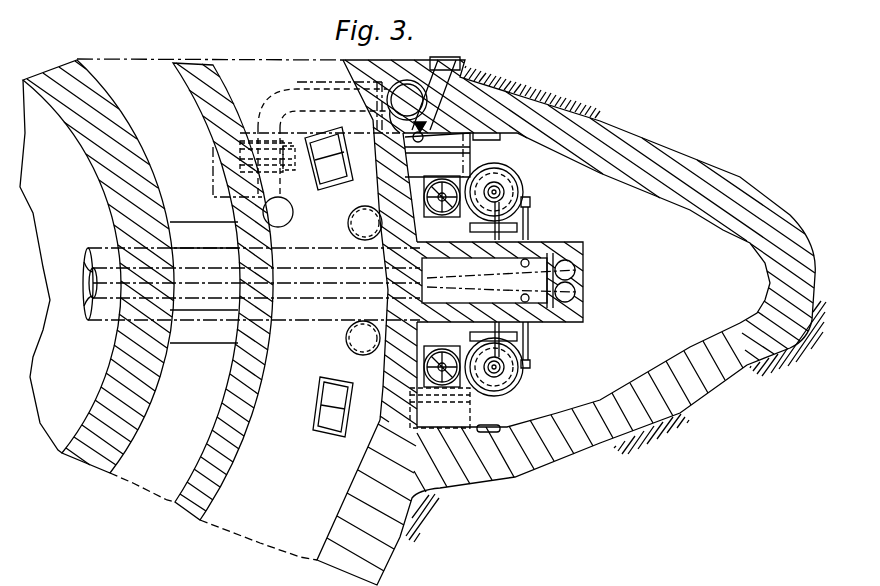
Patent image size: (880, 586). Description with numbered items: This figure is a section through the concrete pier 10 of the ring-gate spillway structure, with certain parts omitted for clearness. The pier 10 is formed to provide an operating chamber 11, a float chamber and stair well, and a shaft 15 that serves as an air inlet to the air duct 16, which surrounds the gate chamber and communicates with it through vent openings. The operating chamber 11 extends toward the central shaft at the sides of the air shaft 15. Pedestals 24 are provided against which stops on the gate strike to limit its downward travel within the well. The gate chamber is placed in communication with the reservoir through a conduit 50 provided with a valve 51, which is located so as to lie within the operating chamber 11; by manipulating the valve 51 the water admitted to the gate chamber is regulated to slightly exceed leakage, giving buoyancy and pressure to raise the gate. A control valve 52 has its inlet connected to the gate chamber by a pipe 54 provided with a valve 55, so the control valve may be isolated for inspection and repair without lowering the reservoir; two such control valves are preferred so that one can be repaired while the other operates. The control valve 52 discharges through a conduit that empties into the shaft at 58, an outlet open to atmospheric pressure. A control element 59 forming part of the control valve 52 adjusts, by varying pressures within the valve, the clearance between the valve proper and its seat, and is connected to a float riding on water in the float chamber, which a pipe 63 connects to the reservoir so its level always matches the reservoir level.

The concrete pier 10 is at (670, 163).
The operating chamber 11 is at (707, 230).
The shaft 15 is at (578, 272).
The air duct 16 is at (213, 371).
The pedestals 24 is at (323, 137).
The conduit 50 is at (432, 66).
The valve 51 is at (215, 148).
The control valve 52 is at (512, 185).
The pipe 54 is at (367, 240).
The valve 55 is at (460, 178).
The outlet into shaft 58 is at (88, 281).
The control element 59 is at (500, 196).
The pipe 63 is at (462, 78).